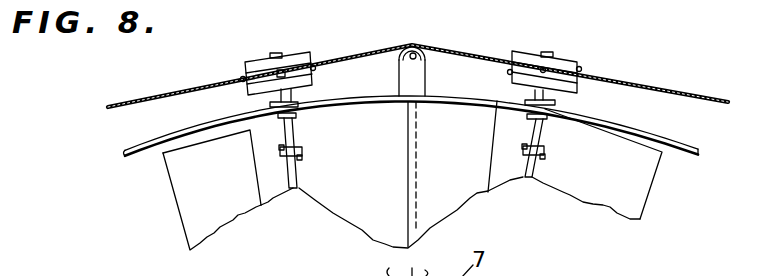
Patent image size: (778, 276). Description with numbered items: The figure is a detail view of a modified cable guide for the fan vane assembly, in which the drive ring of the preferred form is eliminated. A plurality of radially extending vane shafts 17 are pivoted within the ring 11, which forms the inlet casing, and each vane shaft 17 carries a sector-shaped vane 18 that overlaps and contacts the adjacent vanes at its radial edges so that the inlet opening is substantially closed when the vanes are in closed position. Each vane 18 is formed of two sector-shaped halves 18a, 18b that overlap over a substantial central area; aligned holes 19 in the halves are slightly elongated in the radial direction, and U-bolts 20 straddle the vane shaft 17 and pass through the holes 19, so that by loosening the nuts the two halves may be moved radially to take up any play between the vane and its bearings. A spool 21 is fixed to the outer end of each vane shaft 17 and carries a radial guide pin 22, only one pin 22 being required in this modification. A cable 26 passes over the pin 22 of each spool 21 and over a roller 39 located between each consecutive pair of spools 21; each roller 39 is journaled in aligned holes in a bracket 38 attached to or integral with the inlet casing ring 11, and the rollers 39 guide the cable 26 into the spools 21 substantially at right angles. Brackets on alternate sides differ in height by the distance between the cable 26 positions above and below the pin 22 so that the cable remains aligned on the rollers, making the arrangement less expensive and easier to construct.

The ring 11 is at (133, 157).
The cable 26 is at (658, 92).
The bracket 38 is at (413, 70).
The roller 39 is at (413, 47).
The guide pin 22 is at (312, 62).
The spool 21 is at (563, 62).
The vane shaft 17 is at (296, 190).
The hole 19 is at (301, 148).
The vane half 18a is at (226, 191).
The vane half 18b is at (372, 180).
The vane 18 is at (353, 232).
The U-bolt 20 is at (290, 171).